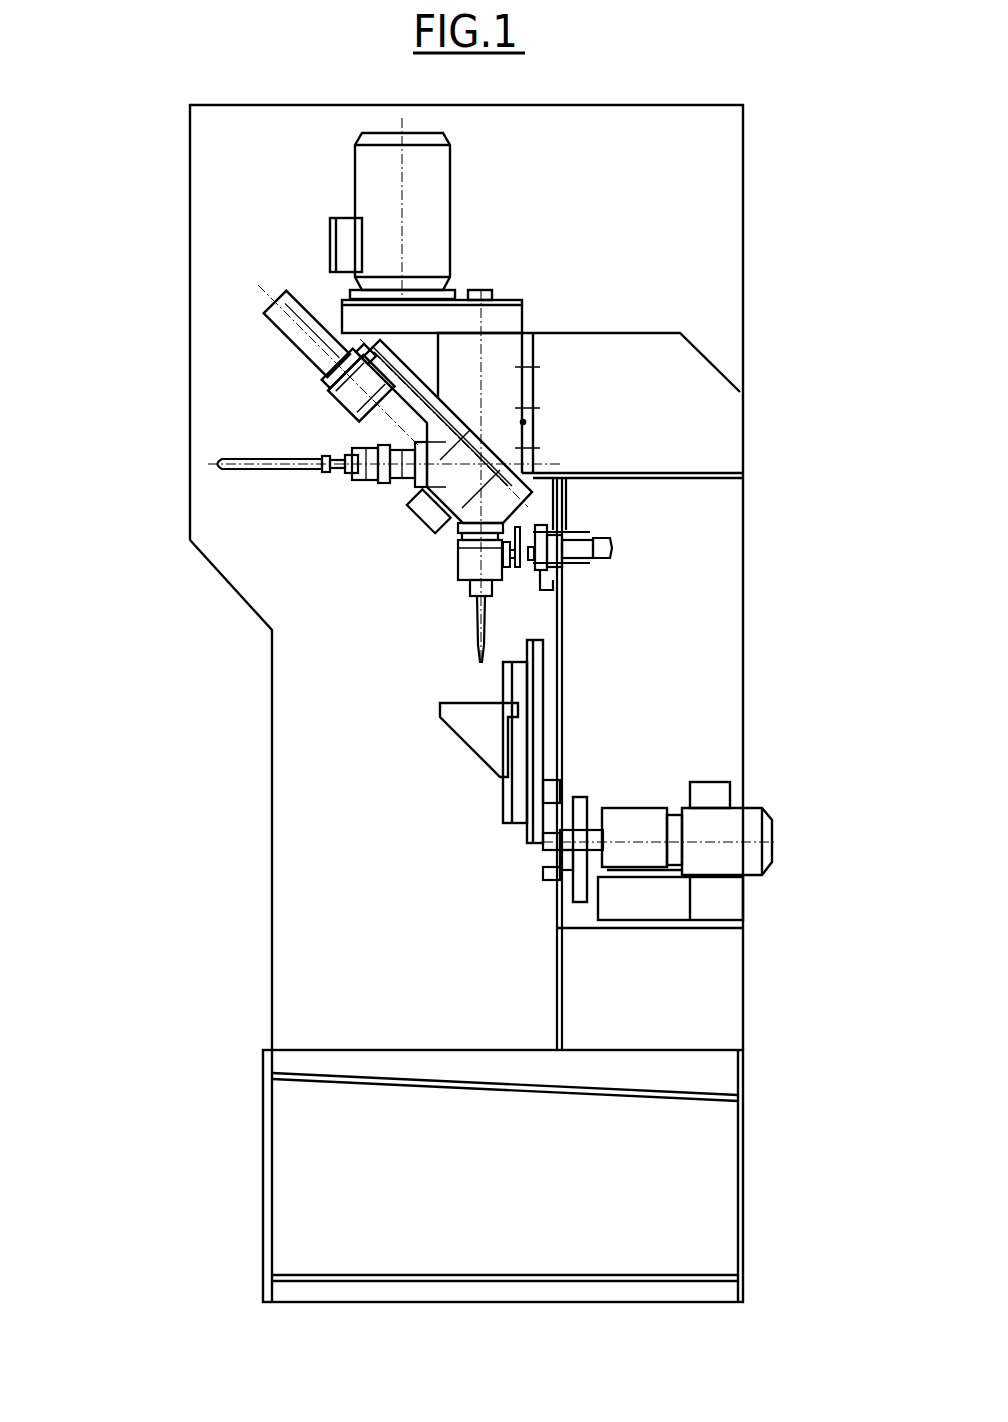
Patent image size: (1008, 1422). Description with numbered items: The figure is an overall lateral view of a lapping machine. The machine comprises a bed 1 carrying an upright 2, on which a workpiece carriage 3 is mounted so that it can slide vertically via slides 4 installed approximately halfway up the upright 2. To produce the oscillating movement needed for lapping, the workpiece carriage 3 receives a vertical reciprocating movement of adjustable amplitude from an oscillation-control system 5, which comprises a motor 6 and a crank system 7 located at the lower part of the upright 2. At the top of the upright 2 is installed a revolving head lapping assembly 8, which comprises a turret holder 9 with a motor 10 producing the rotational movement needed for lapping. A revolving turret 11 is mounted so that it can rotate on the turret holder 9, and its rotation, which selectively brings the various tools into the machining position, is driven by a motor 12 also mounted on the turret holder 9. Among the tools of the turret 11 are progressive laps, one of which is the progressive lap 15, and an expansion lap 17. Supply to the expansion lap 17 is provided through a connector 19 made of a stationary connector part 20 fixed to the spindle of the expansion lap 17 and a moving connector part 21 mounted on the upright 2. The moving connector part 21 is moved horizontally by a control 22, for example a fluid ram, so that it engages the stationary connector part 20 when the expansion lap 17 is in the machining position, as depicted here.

The bed 1 is at (752, 1145).
The upright 2 is at (752, 658).
The workpiece carriage 3 is at (480, 750).
The slides 4 is at (545, 697).
The oscillation-control system 5 is at (529, 866).
The motor 6 is at (723, 862).
The crank system 7 is at (588, 797).
The revolving head lapping assembly 8 is at (603, 262).
The turret holder 9 is at (473, 433).
The motor 10 is at (368, 200).
The revolving turret 11 is at (381, 508).
The motor 12 is at (285, 347).
The progressive lap 15 is at (297, 458).
The expansion lap 17 is at (445, 563).
The connector 19 is at (540, 513).
The stationary connector part 20 is at (515, 578).
The moving connector part 21 is at (532, 572).
The control 22 is at (612, 548).